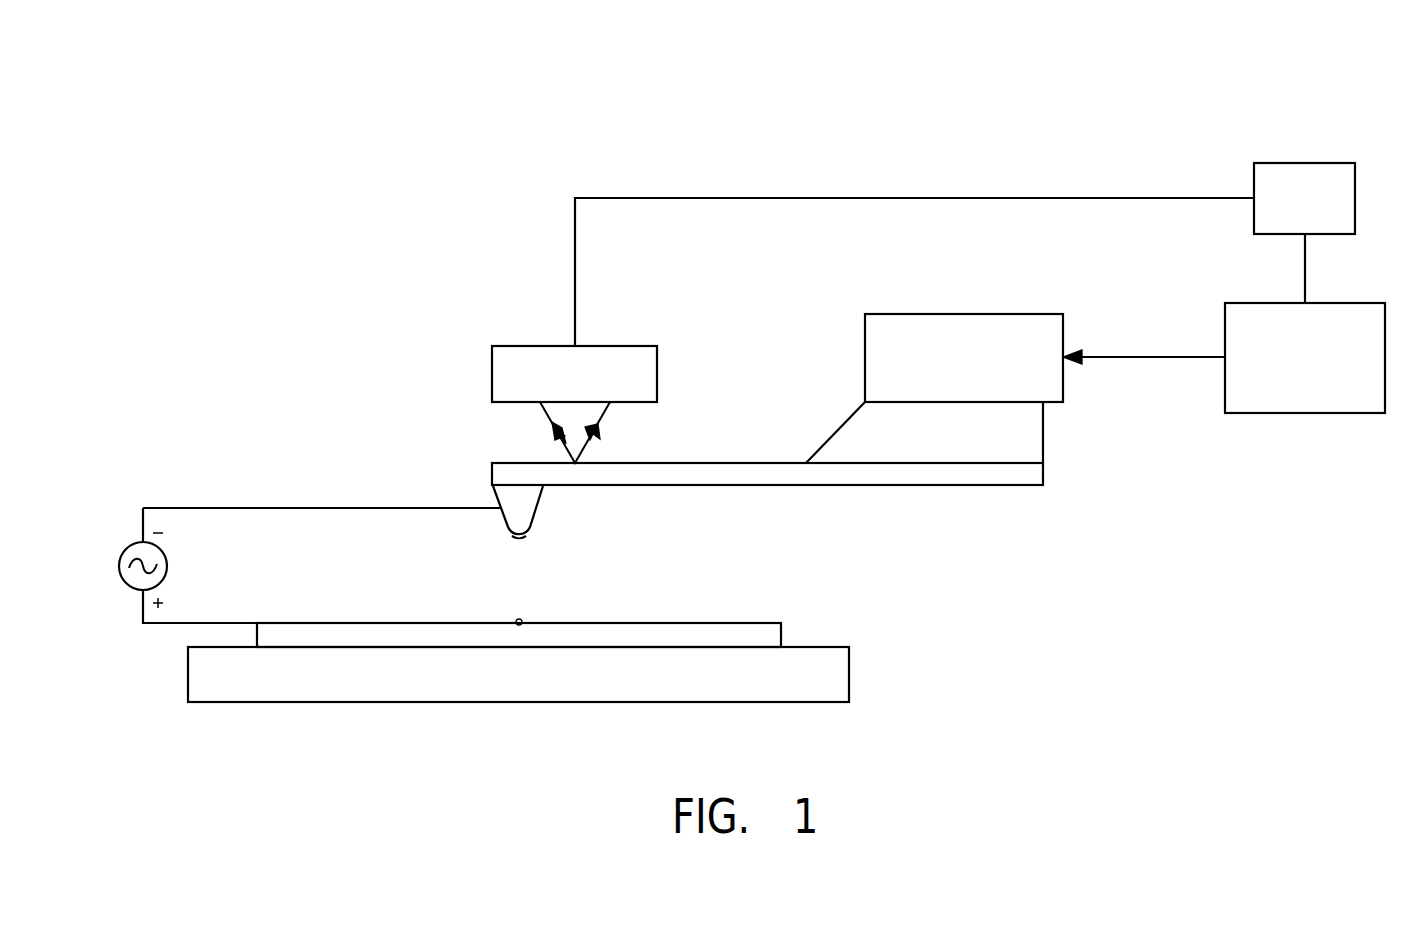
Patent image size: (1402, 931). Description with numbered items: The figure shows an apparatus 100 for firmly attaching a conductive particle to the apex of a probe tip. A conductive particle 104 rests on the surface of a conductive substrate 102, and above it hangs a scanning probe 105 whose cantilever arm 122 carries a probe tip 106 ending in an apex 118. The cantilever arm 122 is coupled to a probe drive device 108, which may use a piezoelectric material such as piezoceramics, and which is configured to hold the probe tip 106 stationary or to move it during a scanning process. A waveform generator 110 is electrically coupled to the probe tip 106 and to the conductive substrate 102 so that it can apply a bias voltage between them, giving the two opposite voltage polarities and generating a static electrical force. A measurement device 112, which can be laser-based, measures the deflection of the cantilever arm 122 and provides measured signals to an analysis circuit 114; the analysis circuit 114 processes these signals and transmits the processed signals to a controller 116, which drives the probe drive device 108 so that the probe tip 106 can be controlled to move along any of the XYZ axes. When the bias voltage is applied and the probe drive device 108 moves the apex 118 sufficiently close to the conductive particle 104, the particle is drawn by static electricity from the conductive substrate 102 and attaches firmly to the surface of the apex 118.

The apparatus 100 is at (282, 142).
The conductive substrate 102 is at (643, 638).
The conductive particle 104 is at (522, 619).
The scanning probe 105 is at (715, 490).
The probe tip 106 is at (538, 508).
The probe drive device 108 is at (965, 314).
The waveform generator 110 is at (126, 584).
The measurement device 112 is at (522, 346).
The analysis circuit 114 is at (1305, 163).
The controller 116 is at (1305, 413).
The apex 118 is at (518, 539).
The cantilever arm 122 is at (794, 470).